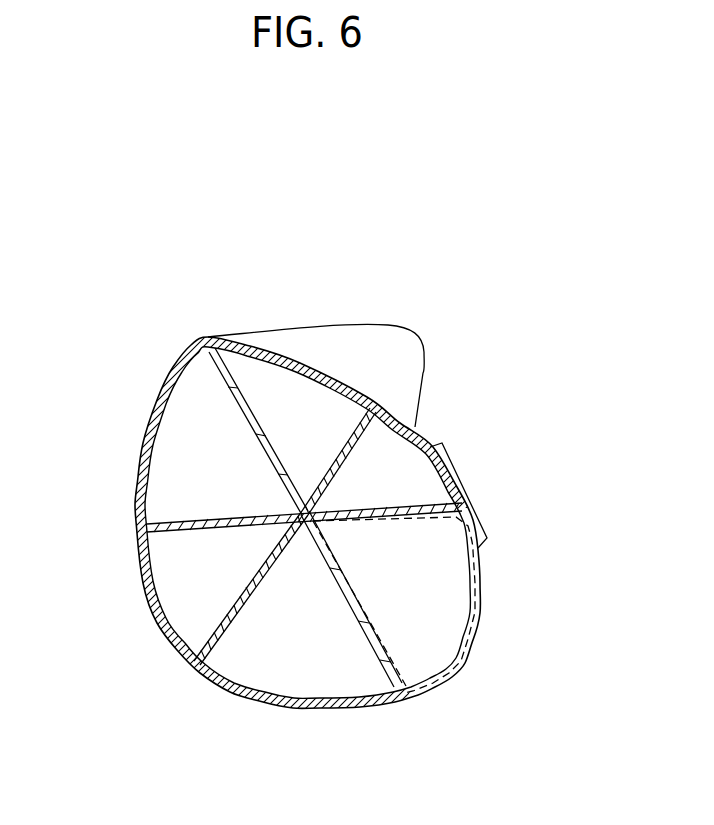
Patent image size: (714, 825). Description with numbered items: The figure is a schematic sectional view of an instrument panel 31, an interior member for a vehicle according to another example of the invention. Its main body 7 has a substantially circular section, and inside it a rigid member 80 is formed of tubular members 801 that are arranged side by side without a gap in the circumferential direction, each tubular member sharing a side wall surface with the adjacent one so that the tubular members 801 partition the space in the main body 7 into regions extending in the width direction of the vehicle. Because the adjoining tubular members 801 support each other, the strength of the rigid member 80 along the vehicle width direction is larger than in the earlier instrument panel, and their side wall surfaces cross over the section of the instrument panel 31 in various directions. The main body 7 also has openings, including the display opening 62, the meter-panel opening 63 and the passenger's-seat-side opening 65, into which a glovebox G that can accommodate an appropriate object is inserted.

The instrument panel 31 is at (267, 262).
The main body 7 is at (172, 646).
The rigid member 80 is at (166, 510).
The tubular members 801 is at (250, 582).
The passenger's-seat-side opening 65 is at (427, 690).
The glovebox G is at (480, 623).
The display opening 62 is at (473, 500).
The meter-panel opening 63 is at (423, 370).